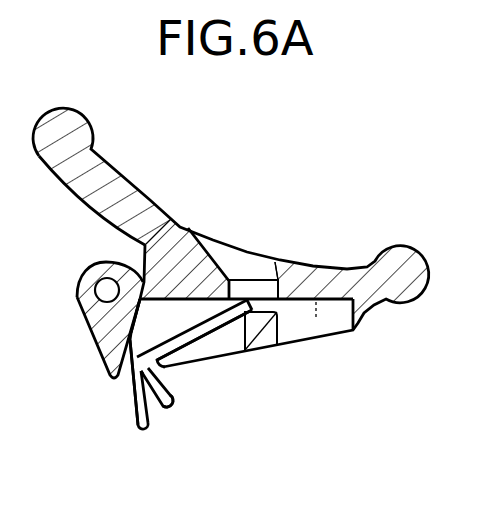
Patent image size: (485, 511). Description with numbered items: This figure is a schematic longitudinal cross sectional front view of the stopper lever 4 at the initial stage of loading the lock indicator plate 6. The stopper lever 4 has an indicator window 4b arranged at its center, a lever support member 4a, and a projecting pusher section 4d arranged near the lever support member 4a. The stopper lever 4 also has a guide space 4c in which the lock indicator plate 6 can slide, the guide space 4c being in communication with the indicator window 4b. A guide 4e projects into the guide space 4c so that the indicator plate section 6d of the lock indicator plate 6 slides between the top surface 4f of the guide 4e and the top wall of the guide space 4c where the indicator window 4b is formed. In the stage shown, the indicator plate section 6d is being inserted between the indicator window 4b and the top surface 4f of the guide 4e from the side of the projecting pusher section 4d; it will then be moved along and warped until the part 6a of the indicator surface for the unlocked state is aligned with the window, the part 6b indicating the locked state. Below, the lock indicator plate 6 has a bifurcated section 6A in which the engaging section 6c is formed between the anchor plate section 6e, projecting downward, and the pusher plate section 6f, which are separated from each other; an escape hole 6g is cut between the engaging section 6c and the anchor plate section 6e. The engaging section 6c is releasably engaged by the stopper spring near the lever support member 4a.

The stopper lever 4 is at (132, 182).
The lever support member 4a is at (88, 273).
The indicator window 4b is at (256, 252).
The guide space 4c is at (336, 318).
The projecting pusher section 4d is at (113, 355).
The guide 4e is at (267, 342).
The top surface of the guide 4f is at (276, 264).
The lock indicator plate 6 is at (218, 332).
The part of the lock indicator surface indicating the unlocked state 6a is at (252, 266).
The part of the lock indicator surface indicating the locked state 6b is at (166, 262).
The engaging section 6c is at (152, 403).
The indicator plate section 6d is at (172, 352).
The anchor plate section 6e is at (138, 432).
The pusher plate section 6f is at (167, 403).
The escape hole 6g is at (126, 380).
The bifurcated section 6A is at (132, 417).